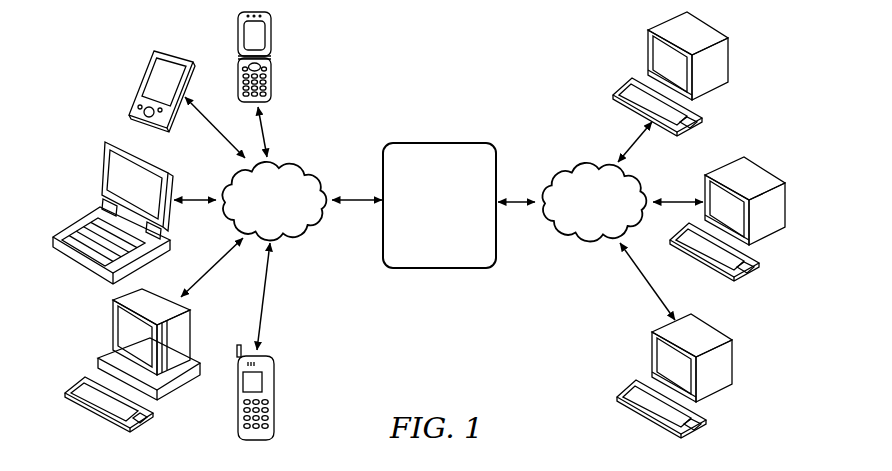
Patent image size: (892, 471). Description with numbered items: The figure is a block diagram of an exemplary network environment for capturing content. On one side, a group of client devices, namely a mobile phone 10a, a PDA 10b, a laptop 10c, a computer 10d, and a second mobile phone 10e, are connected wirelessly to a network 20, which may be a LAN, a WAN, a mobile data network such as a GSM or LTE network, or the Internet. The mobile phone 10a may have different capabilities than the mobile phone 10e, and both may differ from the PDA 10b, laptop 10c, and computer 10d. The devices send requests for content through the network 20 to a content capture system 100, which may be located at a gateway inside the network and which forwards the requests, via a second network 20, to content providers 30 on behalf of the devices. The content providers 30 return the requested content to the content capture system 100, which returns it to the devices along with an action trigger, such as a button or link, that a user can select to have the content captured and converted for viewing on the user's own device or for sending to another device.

The mobile phone 10a is at (237, 33).
The PDA 10b is at (143, 75).
The laptop 10c is at (88, 212).
The computer 10d is at (95, 412).
The mobile phone 10e is at (237, 425).
The network 20 is at (298, 162).
The content capture system 100 is at (438, 143).
The content providers 30 is at (728, 57).